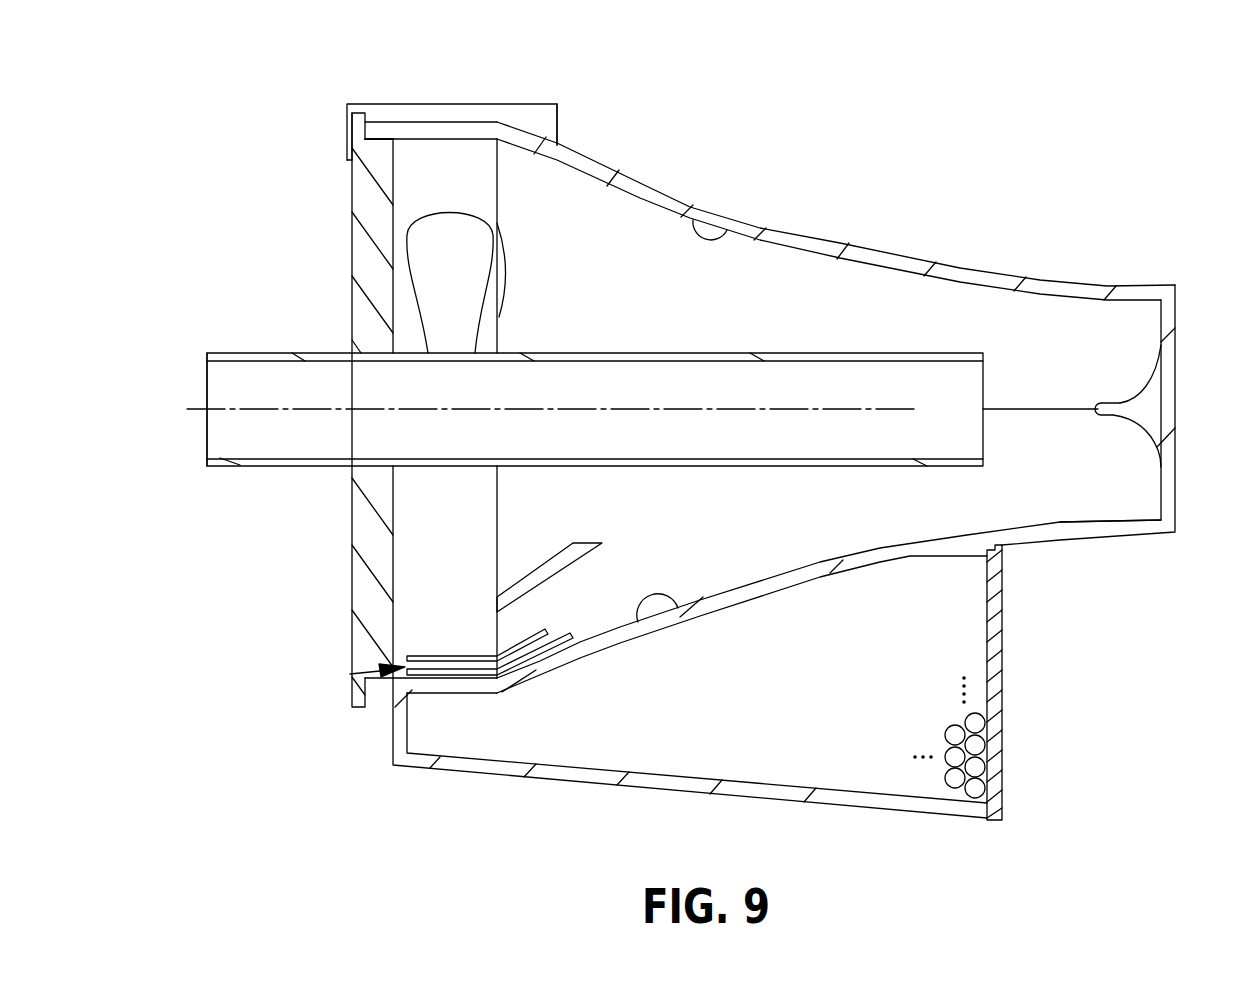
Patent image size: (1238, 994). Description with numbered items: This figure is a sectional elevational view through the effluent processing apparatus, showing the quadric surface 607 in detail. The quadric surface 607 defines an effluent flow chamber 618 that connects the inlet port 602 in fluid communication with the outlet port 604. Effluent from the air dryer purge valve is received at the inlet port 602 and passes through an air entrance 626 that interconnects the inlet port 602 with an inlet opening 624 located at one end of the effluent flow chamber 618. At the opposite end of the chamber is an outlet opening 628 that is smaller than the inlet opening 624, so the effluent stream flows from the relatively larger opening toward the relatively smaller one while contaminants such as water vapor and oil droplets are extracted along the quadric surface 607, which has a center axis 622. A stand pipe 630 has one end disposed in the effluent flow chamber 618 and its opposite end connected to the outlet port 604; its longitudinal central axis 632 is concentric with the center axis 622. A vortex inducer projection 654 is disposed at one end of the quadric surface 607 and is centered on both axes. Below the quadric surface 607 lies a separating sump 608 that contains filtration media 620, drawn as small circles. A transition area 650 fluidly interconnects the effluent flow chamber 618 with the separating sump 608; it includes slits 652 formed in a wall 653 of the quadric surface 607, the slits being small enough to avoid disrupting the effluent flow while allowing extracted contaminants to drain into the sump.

The inlet port 602 is at (435, 105).
The outlet port 604 is at (212, 423).
The quadric surface 607 is at (697, 214).
The separating sump 608 is at (838, 722).
The effluent flow chamber 618 is at (858, 298).
The filtration media 620 is at (975, 791).
The center axis 622 is at (376, 408).
The inlet opening 624 is at (497, 200).
The air entrance 626 is at (418, 192).
The outlet opening 628 is at (1157, 328).
The stand pipe 630 is at (612, 355).
The longitudinal central axis 632 is at (805, 406).
The transition area 650 is at (350, 674).
The slits 652 is at (440, 658).
The wall 653 is at (420, 560).
The vortex inducer projection 654 is at (1130, 412).